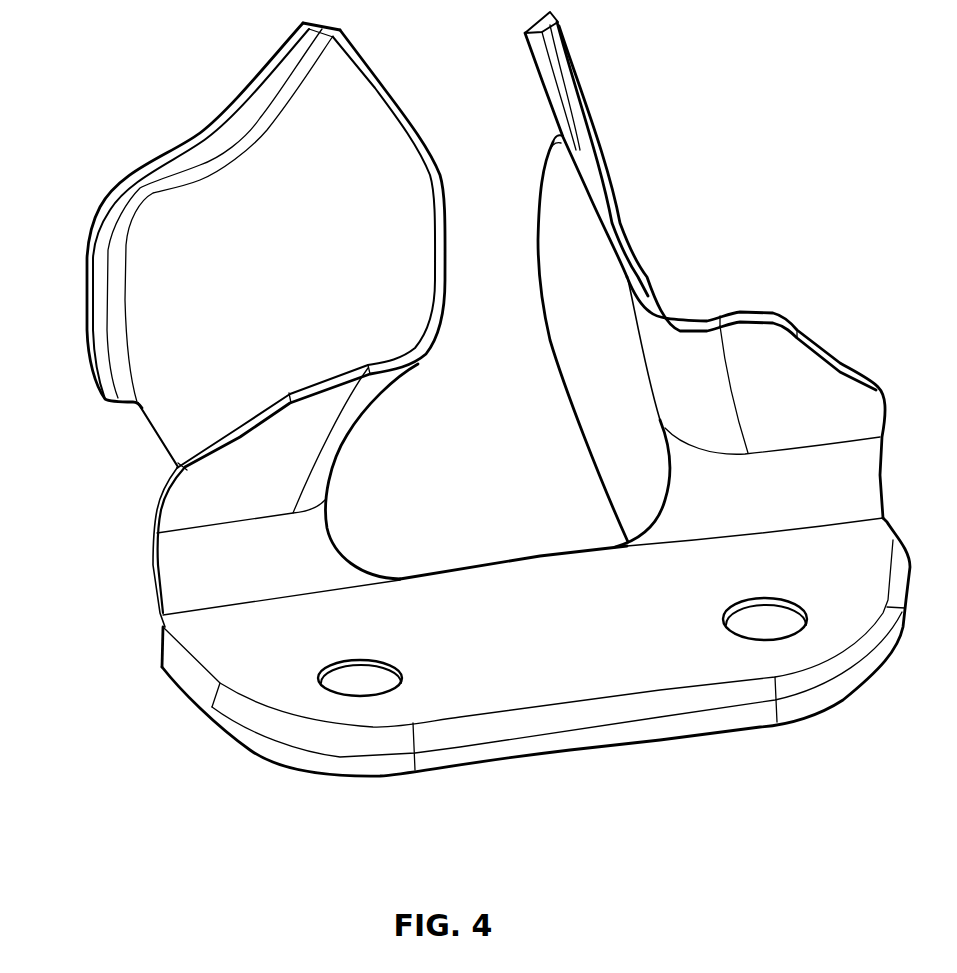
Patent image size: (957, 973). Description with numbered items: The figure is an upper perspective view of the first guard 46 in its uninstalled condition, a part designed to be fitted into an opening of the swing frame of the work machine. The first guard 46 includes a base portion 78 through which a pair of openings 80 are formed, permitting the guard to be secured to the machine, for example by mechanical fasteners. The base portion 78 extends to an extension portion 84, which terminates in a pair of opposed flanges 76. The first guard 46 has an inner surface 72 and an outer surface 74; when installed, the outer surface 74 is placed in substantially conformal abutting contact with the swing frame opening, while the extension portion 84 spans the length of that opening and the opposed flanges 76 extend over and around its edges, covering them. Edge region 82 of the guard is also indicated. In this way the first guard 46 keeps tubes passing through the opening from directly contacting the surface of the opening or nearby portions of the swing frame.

The first guard 46 is at (483, 563).
The inner surface 72 is at (550, 355).
The outer surface 74 is at (357, 113).
The opposed flanges 76 is at (160, 154).
The base portion 78 is at (530, 643).
The openings 80 is at (335, 693).
The plate edge 82 is at (457, 737).
The extension portion 84 is at (73, 145).